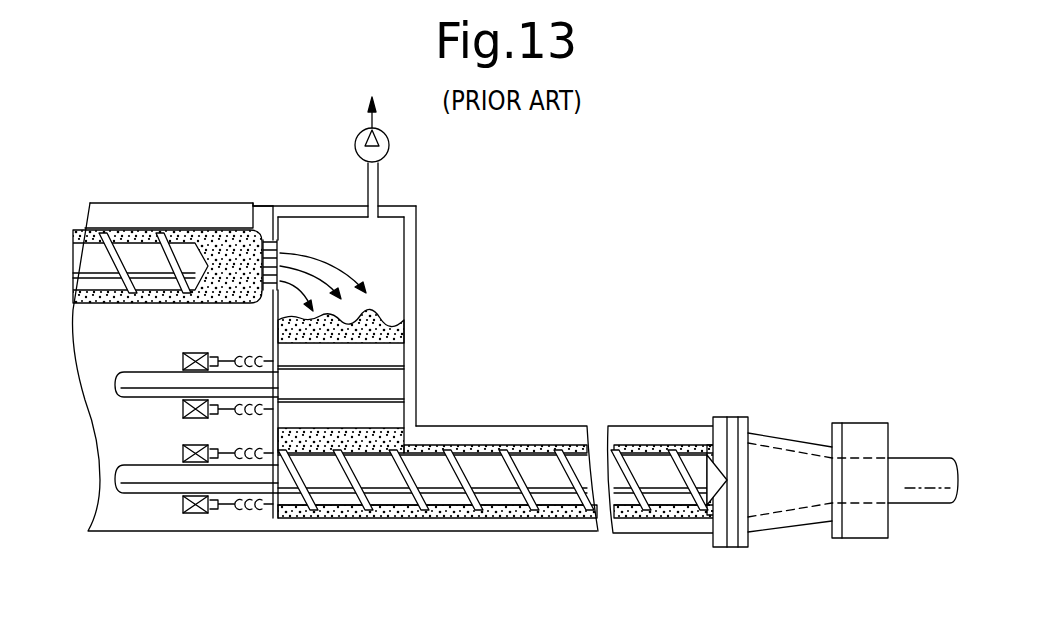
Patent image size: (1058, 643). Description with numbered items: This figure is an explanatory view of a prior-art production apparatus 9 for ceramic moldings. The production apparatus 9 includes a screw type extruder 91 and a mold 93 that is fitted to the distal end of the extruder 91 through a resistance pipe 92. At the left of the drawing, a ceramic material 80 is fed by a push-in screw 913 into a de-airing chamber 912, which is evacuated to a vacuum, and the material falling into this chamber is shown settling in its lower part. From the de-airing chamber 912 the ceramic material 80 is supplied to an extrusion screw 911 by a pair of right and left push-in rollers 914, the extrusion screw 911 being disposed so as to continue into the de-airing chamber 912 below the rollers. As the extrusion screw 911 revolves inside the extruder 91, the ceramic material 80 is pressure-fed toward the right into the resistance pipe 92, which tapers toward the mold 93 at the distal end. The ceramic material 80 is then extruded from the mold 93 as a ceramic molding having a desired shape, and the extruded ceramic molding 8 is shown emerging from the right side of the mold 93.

The production apparatus 9 is at (570, 312).
The screw type extruder 91 is at (526, 415).
The extrusion screw 911 is at (502, 490).
The de-airing chamber 912 is at (392, 246).
The push-in screw 913 is at (140, 255).
The push-in rollers 914 is at (375, 382).
The resistance pipe 92 is at (782, 497).
The mold 93 is at (870, 437).
The extruded body (honeycomb structure) 8 is at (935, 477).
The ceramic material 80 is at (232, 262).